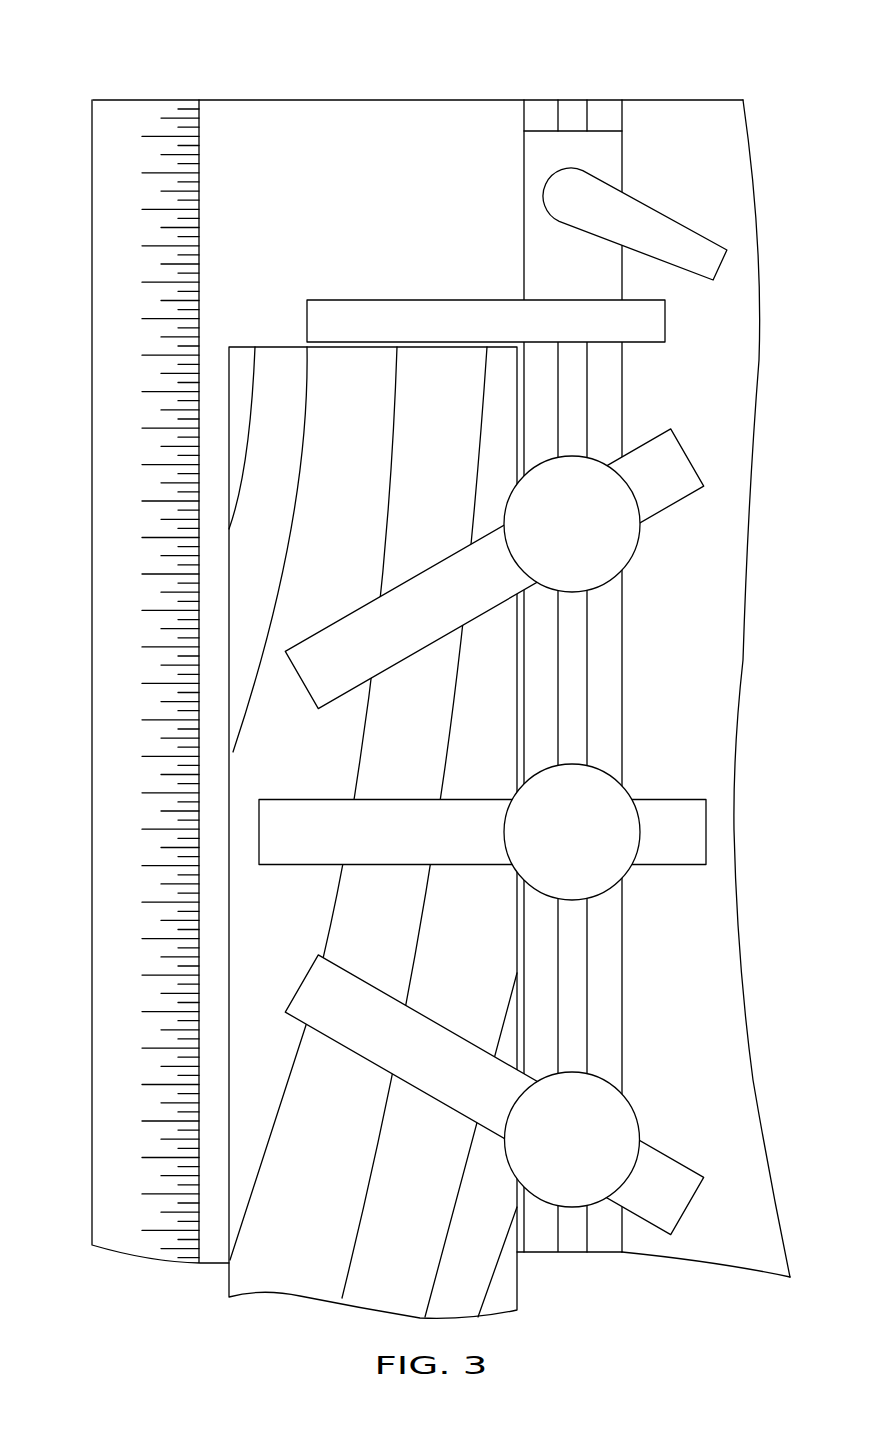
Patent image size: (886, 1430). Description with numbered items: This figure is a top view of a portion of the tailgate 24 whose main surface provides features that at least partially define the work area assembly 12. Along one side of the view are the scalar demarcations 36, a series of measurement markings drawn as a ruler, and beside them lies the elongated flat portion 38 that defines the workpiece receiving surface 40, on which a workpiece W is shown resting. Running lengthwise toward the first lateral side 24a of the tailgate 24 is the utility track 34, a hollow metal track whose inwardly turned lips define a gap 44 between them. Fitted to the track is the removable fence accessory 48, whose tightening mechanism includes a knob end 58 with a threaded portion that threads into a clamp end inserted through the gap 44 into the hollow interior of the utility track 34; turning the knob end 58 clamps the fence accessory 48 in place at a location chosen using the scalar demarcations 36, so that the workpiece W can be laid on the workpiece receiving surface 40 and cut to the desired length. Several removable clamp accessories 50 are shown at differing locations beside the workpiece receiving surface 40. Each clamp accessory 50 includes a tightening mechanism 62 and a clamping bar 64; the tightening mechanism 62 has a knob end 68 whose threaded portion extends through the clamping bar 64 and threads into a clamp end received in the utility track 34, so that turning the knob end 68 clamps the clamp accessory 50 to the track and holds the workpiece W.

The work area assembly 12 is at (210, 70).
The tailgate 24 is at (481, 125).
The first lateral side 24a is at (643, 98).
The utility track 34 is at (602, 1233).
The scalar demarcations 36 is at (165, 237).
The elongated flat portion 38 is at (345, 180).
The workpiece receiving surface 40 is at (410, 153).
The gap 44 is at (573, 1235).
The fence accessory 48 is at (626, 158).
The clamp accessory 50 is at (691, 447).
The knob end 58 is at (688, 250).
The tightening mechanism 62 is at (644, 553).
The clamping bar 64 is at (342, 653).
The knob end 68 is at (535, 517).
The workpiece W is at (272, 943).